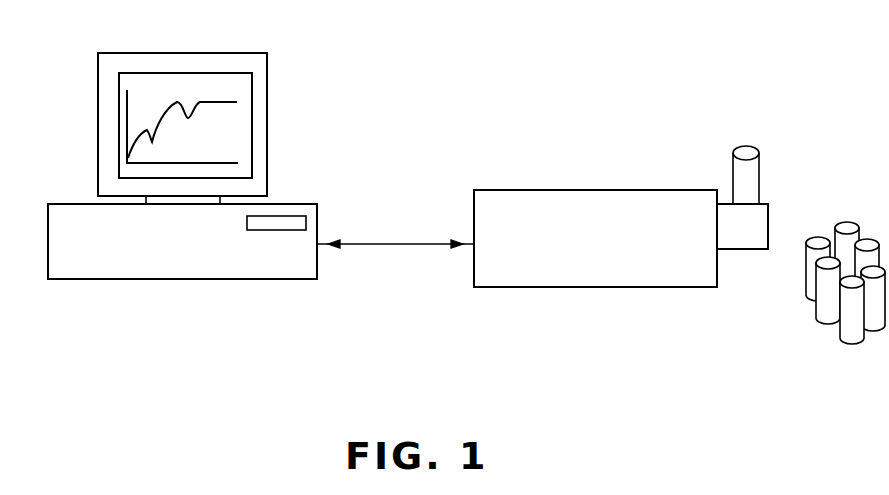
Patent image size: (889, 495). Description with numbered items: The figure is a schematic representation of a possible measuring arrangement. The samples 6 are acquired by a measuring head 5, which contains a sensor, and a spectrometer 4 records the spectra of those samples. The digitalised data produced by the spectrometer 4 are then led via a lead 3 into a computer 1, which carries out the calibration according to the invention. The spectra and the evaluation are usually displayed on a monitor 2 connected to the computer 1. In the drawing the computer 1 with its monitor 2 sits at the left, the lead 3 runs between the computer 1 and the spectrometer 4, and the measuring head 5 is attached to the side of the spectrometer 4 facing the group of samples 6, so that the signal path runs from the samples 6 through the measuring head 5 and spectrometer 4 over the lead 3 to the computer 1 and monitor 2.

The computer 1 is at (60, 244).
The monitor 2 is at (258, 67).
The lead 3 is at (410, 245).
The spectrometer 4 is at (514, 208).
The measuring head 5 is at (750, 238).
The samples 6 is at (837, 222).